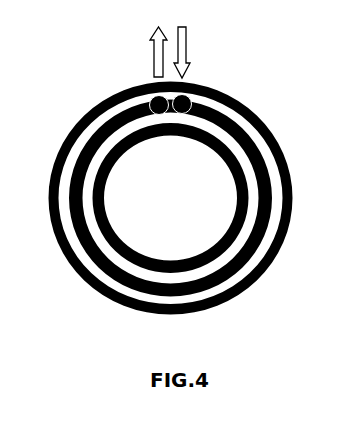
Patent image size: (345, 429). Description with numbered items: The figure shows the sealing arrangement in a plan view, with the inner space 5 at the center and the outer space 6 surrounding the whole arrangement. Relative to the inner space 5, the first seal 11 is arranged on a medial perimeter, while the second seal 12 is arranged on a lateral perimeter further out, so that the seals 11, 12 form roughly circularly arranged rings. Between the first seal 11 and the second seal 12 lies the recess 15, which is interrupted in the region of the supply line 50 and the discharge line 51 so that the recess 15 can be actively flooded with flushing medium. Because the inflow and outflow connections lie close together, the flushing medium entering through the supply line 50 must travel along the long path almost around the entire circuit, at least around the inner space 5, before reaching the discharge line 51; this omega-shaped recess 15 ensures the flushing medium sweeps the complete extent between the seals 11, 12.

The inner space 5 is at (165, 208).
The outer space 6 is at (39, 139).
The first seal 11 is at (236, 161).
The second seal 12 is at (283, 147).
The recess 15 is at (228, 117).
The supply line 50 is at (186, 47).
The discharge line 51 is at (154, 48).